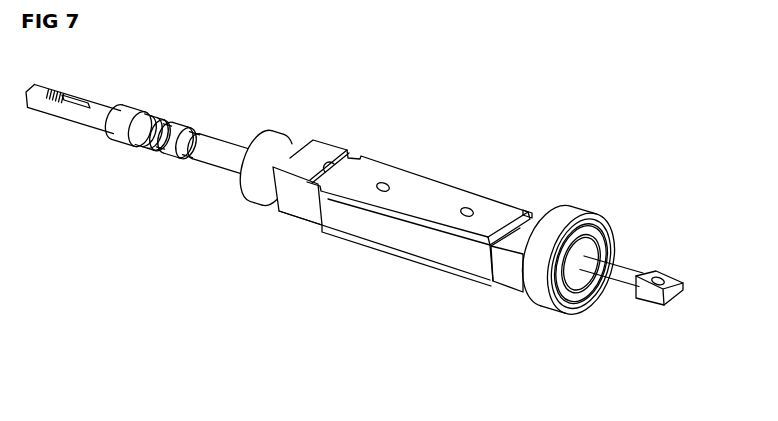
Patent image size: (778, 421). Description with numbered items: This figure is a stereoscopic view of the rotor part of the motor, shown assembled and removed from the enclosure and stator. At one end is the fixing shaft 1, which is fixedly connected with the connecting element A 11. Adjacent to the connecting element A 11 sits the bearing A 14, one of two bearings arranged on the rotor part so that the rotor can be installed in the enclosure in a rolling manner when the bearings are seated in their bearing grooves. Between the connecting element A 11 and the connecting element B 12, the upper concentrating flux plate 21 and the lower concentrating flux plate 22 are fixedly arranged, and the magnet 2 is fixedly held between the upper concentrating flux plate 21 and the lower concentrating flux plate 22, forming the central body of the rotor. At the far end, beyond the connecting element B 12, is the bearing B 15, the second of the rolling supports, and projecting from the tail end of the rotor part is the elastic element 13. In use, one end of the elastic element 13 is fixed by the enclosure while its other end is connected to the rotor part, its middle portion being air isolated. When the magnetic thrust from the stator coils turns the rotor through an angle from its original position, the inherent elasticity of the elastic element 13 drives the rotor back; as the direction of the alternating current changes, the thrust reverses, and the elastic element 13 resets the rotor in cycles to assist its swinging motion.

The fixing shaft 1 is at (208, 143).
The connecting element A 11 is at (320, 158).
The bearing A 14 is at (258, 165).
The magnet 2 is at (357, 220).
The upper concentrating flux plate 21 is at (447, 202).
The lower concentrating flux plate 22 is at (396, 250).
The connecting element B 12 is at (503, 265).
The bearing B 15 is at (555, 227).
The elastic element 13 is at (638, 278).